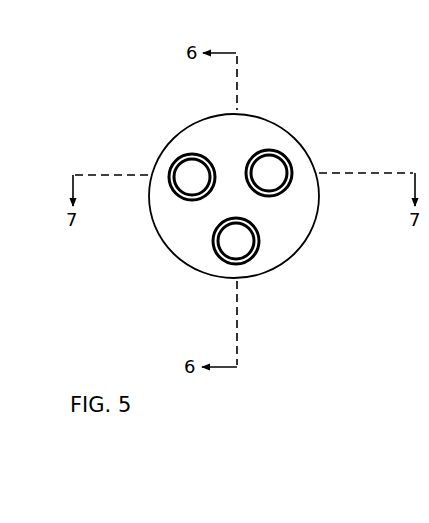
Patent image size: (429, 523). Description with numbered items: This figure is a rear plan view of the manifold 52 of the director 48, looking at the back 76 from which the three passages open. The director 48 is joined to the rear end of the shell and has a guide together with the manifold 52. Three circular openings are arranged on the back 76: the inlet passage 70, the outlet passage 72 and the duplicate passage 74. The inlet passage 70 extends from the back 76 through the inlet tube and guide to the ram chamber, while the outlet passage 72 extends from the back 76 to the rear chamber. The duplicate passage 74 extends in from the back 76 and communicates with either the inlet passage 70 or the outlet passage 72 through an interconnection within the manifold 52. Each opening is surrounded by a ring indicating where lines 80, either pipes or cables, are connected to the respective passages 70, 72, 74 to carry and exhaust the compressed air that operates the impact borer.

The director 48 is at (153, 239).
The manifold 52 is at (316, 220).
The inlet passage 70 is at (244, 251).
The outlet passage 72 is at (271, 168).
The duplicate passage 74 is at (192, 176).
The back 76 is at (246, 209).
The lines 80 is at (175, 163).